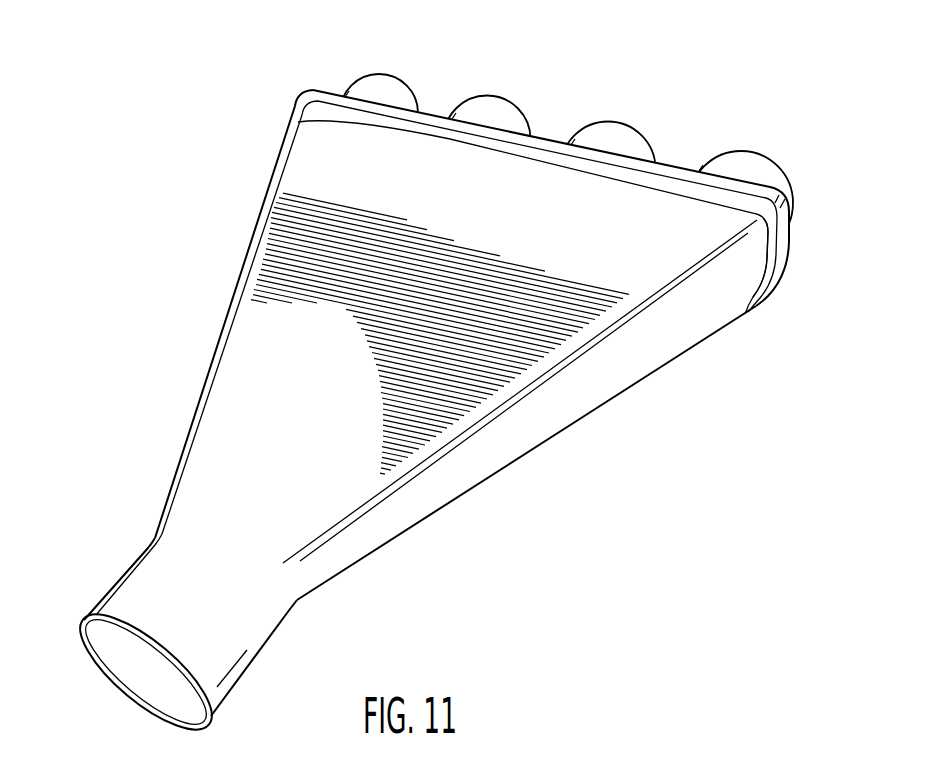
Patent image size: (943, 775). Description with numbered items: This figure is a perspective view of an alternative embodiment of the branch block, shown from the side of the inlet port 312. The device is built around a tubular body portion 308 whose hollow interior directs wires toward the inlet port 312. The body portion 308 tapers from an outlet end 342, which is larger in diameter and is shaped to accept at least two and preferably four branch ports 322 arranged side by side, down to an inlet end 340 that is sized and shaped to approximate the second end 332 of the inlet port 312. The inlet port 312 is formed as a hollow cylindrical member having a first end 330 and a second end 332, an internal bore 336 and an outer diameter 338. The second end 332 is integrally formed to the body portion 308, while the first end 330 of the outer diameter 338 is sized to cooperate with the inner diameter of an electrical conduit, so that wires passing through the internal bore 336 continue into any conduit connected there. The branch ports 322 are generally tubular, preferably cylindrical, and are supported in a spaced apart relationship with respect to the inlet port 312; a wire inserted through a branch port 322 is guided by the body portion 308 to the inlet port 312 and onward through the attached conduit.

The body portion 308 is at (543, 403).
The inlet port 312 is at (120, 600).
The branch port 322 is at (722, 162).
The first end 330 is at (88, 620).
The second end 332 is at (300, 598).
The internal bore 336 is at (100, 658).
The outer diameter 338 is at (238, 665).
The inlet end 340 is at (180, 530).
The outlet end 342 is at (755, 253).